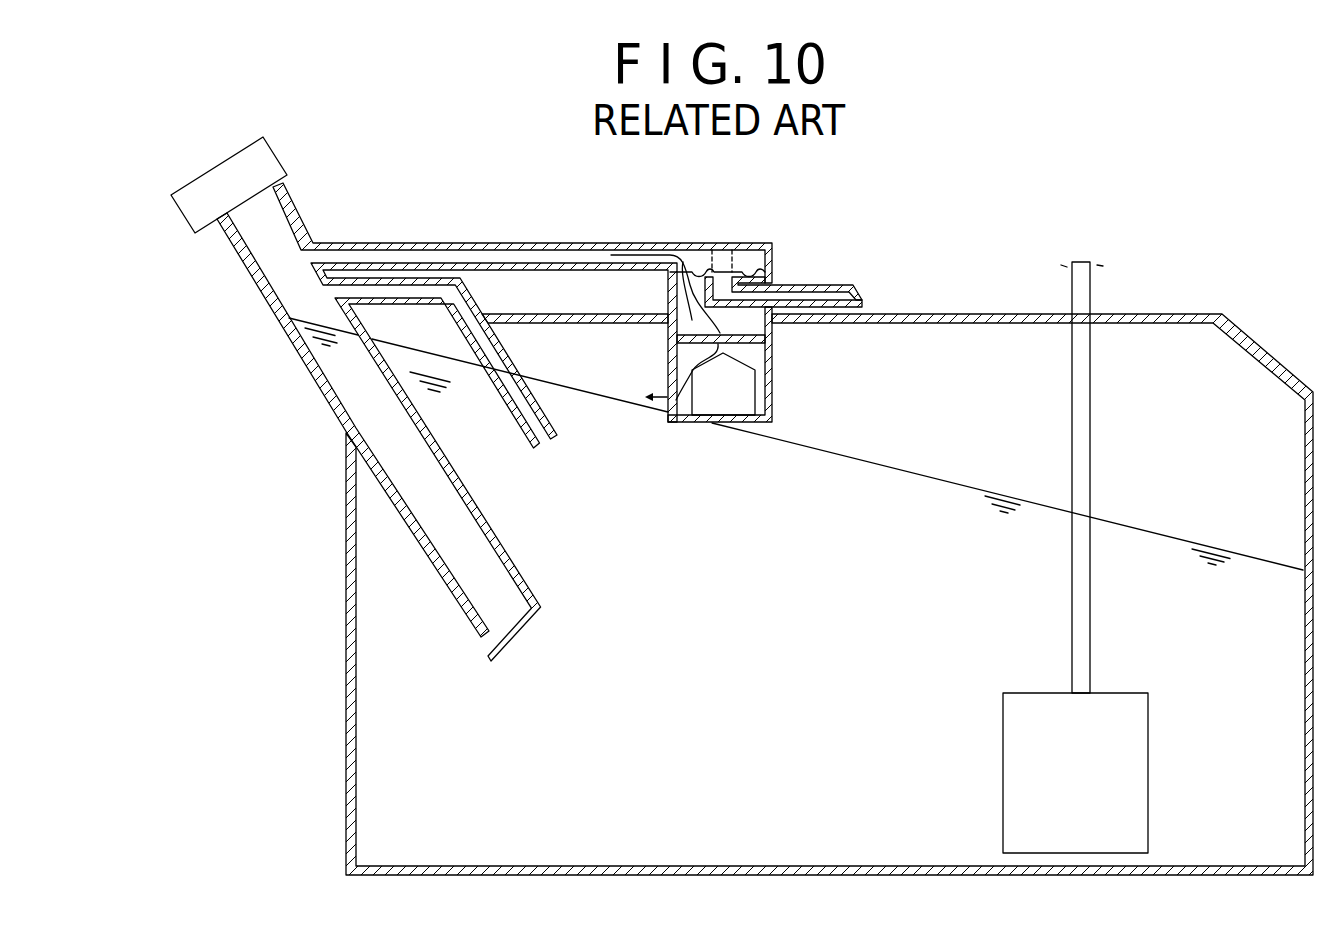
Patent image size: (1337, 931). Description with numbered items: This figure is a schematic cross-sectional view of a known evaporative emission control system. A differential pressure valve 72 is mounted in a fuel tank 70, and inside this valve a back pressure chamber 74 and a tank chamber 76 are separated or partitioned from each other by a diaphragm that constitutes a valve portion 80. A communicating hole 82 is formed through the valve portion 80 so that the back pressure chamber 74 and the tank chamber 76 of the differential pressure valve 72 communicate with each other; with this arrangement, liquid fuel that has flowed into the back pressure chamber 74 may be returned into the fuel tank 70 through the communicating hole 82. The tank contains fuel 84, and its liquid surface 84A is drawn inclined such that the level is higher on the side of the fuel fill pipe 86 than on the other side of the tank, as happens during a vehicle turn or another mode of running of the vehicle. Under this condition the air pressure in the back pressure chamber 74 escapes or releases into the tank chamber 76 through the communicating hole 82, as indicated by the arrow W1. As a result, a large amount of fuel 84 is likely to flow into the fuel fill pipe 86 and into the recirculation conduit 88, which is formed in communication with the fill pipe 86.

The fuel tank 70 is at (1006, 311).
The differential pressure valve 72 is at (749, 233).
The back pressure chamber 74 is at (688, 246).
The tank chamber 76 is at (735, 323).
The valve portion 80 is at (748, 268).
The communicating hole 82 is at (673, 275).
The fuel 84 is at (302, 319).
The liquid surface 84A is at (969, 487).
The fuel fill pipe 86 is at (330, 405).
The recirculation conduit 88 is at (385, 278).
The arrow W1 is at (677, 336).